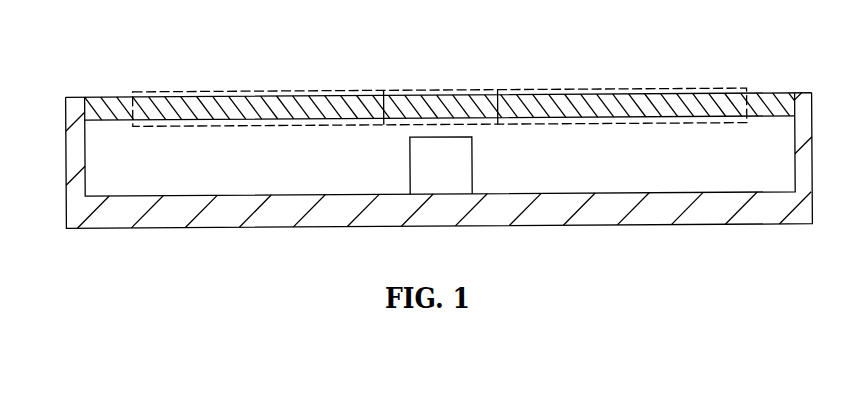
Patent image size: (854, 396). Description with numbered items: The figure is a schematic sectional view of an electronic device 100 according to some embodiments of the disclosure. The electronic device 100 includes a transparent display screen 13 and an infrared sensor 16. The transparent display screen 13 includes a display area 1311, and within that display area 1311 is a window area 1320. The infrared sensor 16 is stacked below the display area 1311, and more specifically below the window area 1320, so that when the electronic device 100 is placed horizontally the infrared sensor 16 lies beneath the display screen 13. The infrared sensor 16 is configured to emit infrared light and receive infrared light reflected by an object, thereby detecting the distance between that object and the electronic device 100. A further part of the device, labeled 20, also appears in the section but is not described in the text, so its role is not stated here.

The electronic device 100 is at (80, 22).
The transparent display screen 13 is at (263, 114).
The display area 1311 is at (593, 89).
The window area 1320 is at (422, 95).
The infrared sensor 16 is at (440, 183).
The housing 20 is at (610, 216).